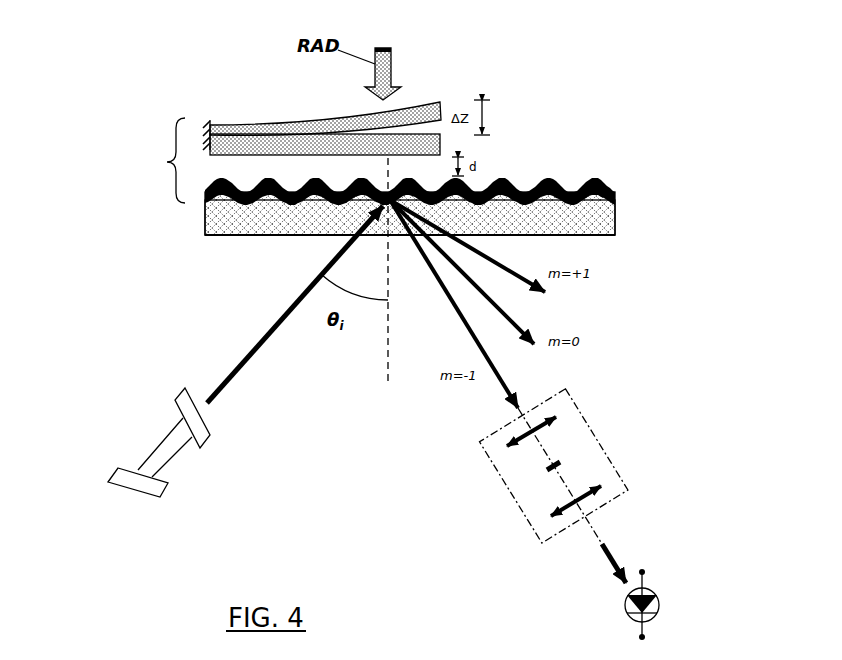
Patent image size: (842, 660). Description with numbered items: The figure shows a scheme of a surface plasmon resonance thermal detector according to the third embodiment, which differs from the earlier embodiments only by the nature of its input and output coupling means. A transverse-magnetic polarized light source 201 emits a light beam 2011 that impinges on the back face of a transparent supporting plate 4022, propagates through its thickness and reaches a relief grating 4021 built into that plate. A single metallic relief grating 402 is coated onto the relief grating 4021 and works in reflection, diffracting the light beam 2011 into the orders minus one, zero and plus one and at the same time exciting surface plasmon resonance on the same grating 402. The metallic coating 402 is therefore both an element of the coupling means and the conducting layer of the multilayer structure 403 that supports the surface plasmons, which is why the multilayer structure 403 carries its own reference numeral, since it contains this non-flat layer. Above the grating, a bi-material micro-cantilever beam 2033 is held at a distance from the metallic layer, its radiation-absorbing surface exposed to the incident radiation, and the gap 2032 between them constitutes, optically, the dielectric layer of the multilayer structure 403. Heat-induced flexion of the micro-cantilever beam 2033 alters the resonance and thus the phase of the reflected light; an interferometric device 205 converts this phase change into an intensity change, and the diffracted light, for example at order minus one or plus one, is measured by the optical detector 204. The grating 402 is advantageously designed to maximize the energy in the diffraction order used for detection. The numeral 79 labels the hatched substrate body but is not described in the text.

The multilayer structure 403 is at (160, 168).
The gap 2032 is at (282, 167).
The bi-material micro-cantilever beam 2033 is at (338, 134).
The metallic relief grating 402 is at (612, 182).
The relief grating 4021 is at (600, 198).
The transparent supporting plate 4022 is at (615, 235).
The substrate body 79 is at (248, 220).
The transverse-magnetic polarized light source 201 is at (165, 441).
The light beam 2011 is at (295, 318).
The interferometric device 205 is at (510, 512).
The optical detector 204 is at (667, 603).